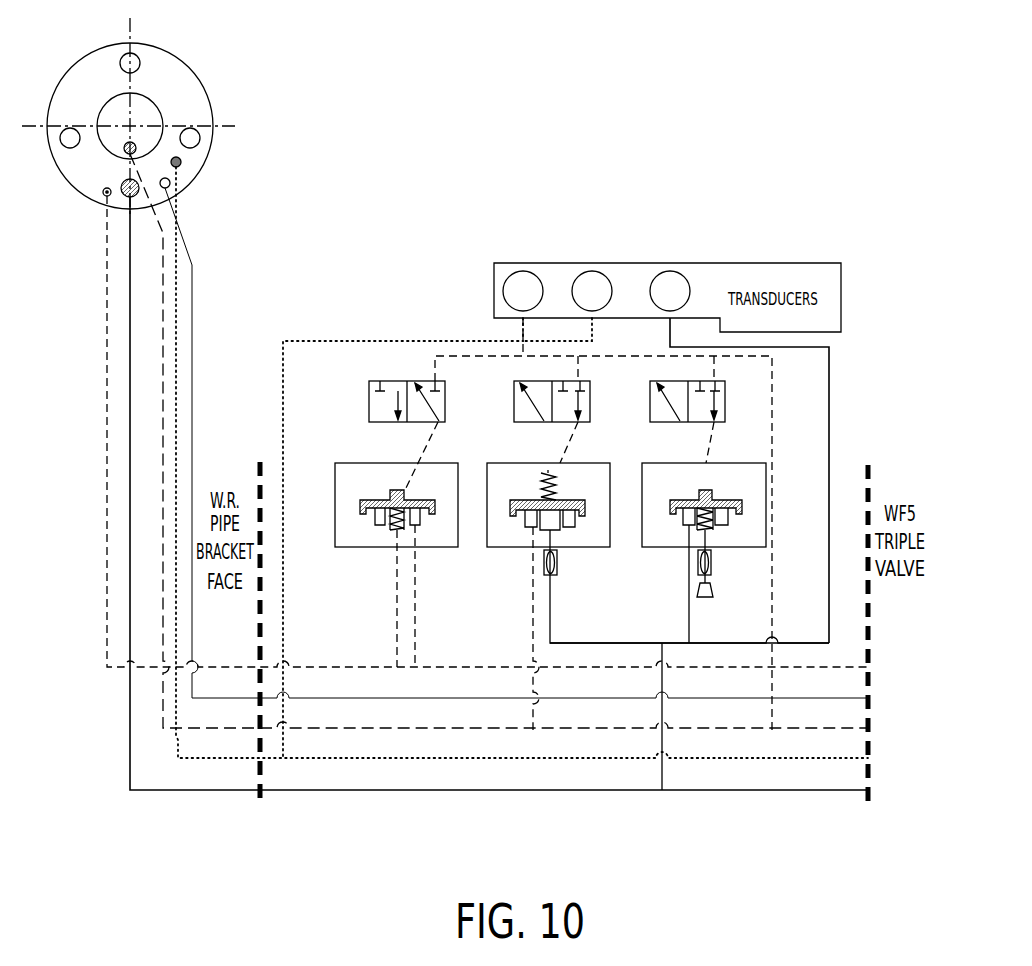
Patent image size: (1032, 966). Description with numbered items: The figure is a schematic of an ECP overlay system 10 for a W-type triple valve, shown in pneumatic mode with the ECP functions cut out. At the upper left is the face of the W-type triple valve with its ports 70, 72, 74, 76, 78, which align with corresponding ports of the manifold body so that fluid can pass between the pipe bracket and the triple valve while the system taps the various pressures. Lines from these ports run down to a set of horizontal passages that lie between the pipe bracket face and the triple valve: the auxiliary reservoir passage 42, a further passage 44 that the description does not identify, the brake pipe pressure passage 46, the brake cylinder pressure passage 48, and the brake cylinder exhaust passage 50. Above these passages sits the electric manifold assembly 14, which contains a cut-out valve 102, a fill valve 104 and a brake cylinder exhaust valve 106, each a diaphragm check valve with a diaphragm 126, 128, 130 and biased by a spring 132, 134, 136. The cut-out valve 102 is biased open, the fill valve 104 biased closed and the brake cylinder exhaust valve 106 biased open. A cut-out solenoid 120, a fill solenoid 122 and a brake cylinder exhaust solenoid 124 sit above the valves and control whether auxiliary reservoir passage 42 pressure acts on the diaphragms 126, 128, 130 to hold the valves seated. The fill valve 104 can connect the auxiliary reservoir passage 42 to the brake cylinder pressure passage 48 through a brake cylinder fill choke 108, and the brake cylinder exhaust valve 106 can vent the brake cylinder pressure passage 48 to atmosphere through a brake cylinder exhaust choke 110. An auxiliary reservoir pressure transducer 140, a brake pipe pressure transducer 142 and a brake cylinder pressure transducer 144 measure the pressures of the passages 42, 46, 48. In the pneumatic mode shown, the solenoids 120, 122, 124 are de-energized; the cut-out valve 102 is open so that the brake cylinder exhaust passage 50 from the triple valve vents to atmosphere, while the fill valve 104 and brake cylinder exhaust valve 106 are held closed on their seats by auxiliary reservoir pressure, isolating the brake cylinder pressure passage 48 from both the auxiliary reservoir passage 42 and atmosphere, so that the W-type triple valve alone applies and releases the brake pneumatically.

The ECP overlay system 10 is at (607, 92).
The electric manifold assembly 14 is at (867, 362).
The auxiliary reservoir passage 42 is at (610, 731).
The brake cylinder passage 44 is at (683, 699).
The brake pipe pressure passage 46 is at (735, 760).
The brake cylinder pressure passage 48 is at (790, 791).
The brake cylinder exhaust passage 50 is at (808, 668).
The port of the W-type triple valve 70 is at (141, 148).
The port of the W-type triple valve 72 is at (186, 162).
The port of the W-type triple valve 74 is at (174, 184).
The port of the W-type triple valve 76 is at (143, 190).
The port of the W-type triple valve 78 is at (100, 192).
The cut-out valve 102 is at (338, 542).
The fill valve 104 is at (628, 556).
The brake cylinder exhaust valve 106 is at (732, 547).
The brake cylinder fill choke 108 is at (560, 560).
The brake cylinder exhaust choke 110 is at (712, 562).
The cut-out solenoid 120 is at (369, 393).
The fill solenoid 122 is at (514, 393).
The brake cylinder exhaust solenoid 124 is at (725, 400).
The diaphragm 126 is at (362, 508).
The diaphragm 128 is at (518, 500).
The diaphragm 130 is at (742, 505).
The spring 132 is at (396, 530).
The spring 134 is at (552, 475).
The spring 136 is at (712, 528).
The auxiliary reservoir pressure transducer 140 is at (524, 270).
The brake pipe pressure transducer 142 is at (593, 270).
The brake cylinder pressure transducer 144 is at (671, 270).